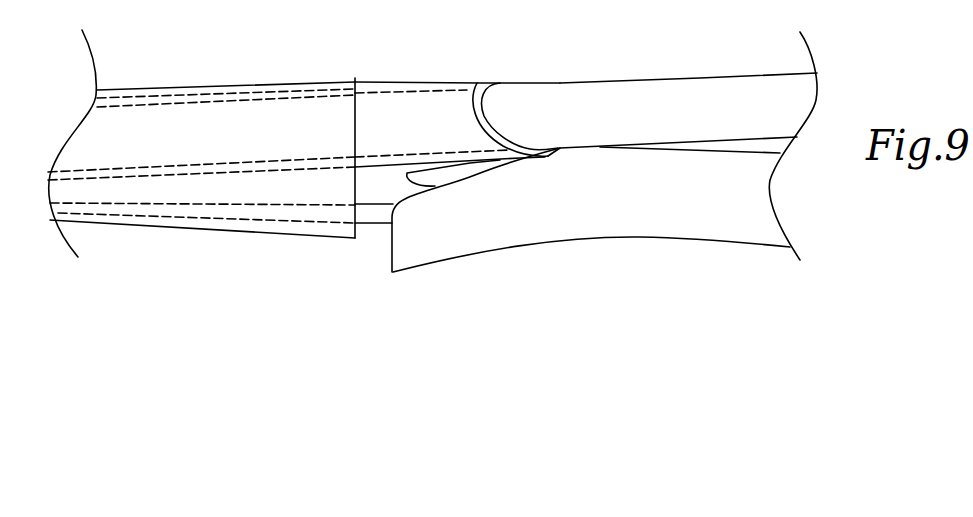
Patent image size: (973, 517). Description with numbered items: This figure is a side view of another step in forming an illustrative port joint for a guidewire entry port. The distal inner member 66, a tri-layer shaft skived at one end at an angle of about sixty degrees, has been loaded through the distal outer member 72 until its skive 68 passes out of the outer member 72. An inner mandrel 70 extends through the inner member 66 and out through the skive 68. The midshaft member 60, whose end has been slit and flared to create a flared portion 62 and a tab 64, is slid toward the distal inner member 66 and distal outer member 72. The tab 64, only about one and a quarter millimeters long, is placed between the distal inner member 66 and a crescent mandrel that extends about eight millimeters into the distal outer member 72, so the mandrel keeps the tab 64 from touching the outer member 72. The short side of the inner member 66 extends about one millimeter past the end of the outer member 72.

The midshaft member 60 is at (727, 227).
The flared portion 62 is at (438, 240).
The tab 64 is at (435, 173).
The inner member 66 is at (433, 86).
The skive 68 is at (497, 127).
The inner mandrel 70 is at (672, 107).
The outer member 72 is at (212, 226).